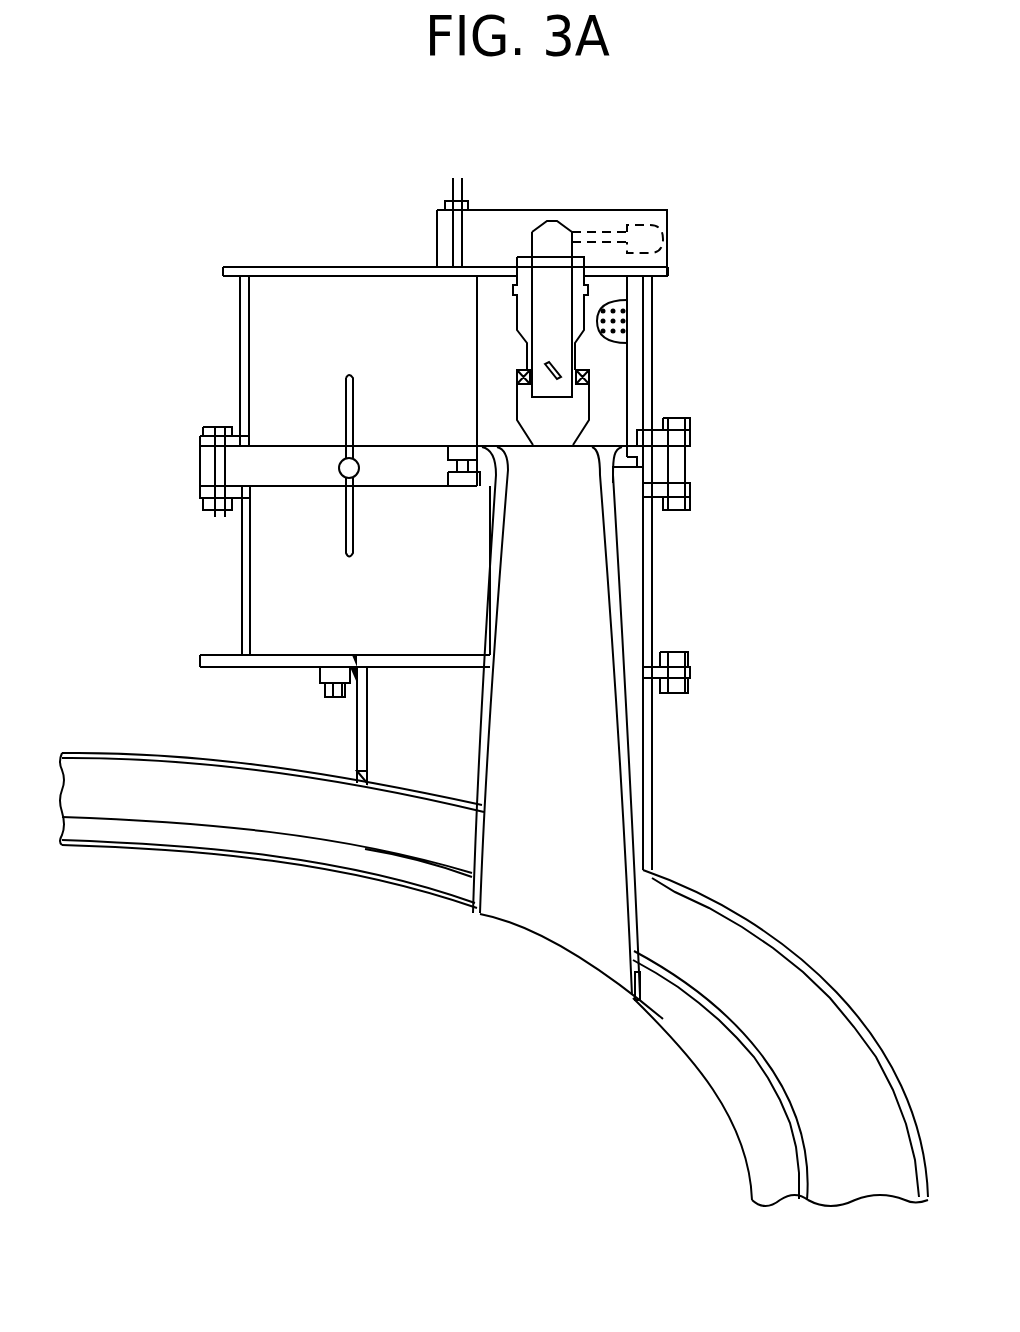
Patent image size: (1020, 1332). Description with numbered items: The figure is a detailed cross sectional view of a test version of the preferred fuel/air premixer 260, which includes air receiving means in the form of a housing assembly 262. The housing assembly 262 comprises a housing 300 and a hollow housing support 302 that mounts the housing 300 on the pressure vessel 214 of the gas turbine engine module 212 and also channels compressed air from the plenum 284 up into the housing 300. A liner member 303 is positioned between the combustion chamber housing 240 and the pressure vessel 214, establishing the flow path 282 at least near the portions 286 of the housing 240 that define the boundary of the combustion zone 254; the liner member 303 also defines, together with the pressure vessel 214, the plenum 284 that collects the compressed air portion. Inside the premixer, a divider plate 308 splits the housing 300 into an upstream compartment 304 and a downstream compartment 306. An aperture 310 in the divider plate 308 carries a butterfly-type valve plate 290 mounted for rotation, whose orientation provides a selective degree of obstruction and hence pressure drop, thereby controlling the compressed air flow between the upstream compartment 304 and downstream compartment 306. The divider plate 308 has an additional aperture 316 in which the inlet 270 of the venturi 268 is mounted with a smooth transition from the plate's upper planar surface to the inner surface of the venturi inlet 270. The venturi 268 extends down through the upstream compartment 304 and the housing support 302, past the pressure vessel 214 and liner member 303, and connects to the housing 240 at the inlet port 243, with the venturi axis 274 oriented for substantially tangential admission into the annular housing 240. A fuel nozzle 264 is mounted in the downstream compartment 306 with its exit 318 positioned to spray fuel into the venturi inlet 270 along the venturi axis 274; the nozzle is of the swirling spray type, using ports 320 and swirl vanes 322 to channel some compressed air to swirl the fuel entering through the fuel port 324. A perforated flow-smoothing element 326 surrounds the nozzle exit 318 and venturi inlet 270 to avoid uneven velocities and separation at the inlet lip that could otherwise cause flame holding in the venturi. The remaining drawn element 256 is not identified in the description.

The gas turbine engine module 212 is at (783, 862).
The pressure vessel 214 is at (810, 967).
The combustion chamber housing 240 is at (720, 1098).
The inlet port 243 is at (480, 917).
The combustion zone 254 is at (277, 1035).
The liner wall 256 is at (683, 1050).
The fuel/air premixer 260 is at (162, 326).
The housing assembly 262 is at (264, 684).
The fuel nozzle 264 is at (530, 256).
The venturi 268 is at (618, 620).
The venturi inlet 270 is at (600, 440).
The venturi axis 274 is at (565, 760).
The flow path 282 is at (92, 827).
The plenum 284 is at (215, 806).
The portions of housing 286 is at (315, 872).
The valve plate 290 is at (344, 397).
The housing 300 is at (242, 553).
The housing support 302 is at (362, 739).
The liner member 303 is at (228, 829).
The upstream compartment 304 is at (393, 618).
The downstream compartment 306 is at (387, 343).
The divider plate 308 is at (203, 486).
The aperture 310 is at (252, 449).
The additional aperture 316 is at (632, 477).
The fuel nozzle exit 318 is at (577, 433).
The ports 320 is at (590, 283).
The swirl vanes 322 is at (523, 370).
The fuel port 324 is at (663, 225).
The perforated flow-smoothing element 326 is at (627, 322).